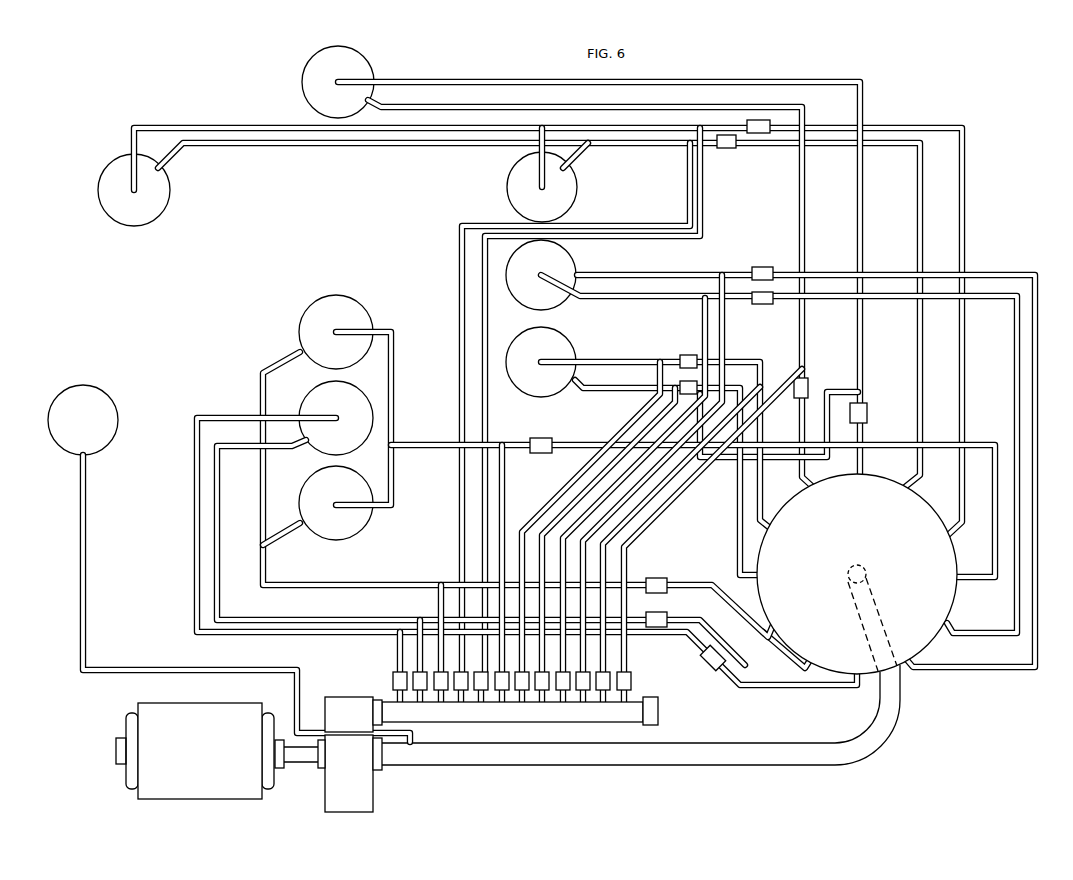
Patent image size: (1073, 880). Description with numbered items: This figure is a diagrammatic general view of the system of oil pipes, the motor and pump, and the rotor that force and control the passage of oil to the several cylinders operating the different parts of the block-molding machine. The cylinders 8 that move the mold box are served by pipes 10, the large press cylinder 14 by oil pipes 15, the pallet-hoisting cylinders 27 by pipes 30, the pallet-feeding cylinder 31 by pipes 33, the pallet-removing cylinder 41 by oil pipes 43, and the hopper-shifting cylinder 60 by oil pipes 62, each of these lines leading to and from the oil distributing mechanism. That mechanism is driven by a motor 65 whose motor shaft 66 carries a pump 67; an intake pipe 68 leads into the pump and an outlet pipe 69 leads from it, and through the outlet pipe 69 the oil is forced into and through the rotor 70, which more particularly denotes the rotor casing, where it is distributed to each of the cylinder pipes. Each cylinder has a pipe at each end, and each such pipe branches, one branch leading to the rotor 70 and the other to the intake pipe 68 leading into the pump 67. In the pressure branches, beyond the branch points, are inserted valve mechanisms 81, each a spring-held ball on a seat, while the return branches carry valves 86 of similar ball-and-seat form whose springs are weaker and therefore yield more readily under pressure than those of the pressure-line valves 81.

The cylinders 8 is at (302, 320).
The pipes 10 is at (384, 327).
The cylinder 14 is at (311, 382).
The oil pipes 15 is at (238, 415).
The cylinders 27 is at (98, 192).
The pipes 30 is at (189, 126).
The cylinder 31 is at (300, 70).
The pipes 33 is at (484, 110).
The cylinder 41 is at (513, 398).
The oil pipes 43 is at (590, 360).
The cylinder 60 is at (514, 308).
The oil pipes 62 is at (589, 272).
The motor 65 is at (128, 712).
The motor shaft 66 is at (303, 768).
The pump 67 is at (382, 789).
The intake pipe 68 is at (660, 710).
The outlet pipe 69 is at (738, 768).
The rotor 70 is at (900, 665).
The valve mechanism 81 is at (760, 135).
The valve 86 is at (395, 680).